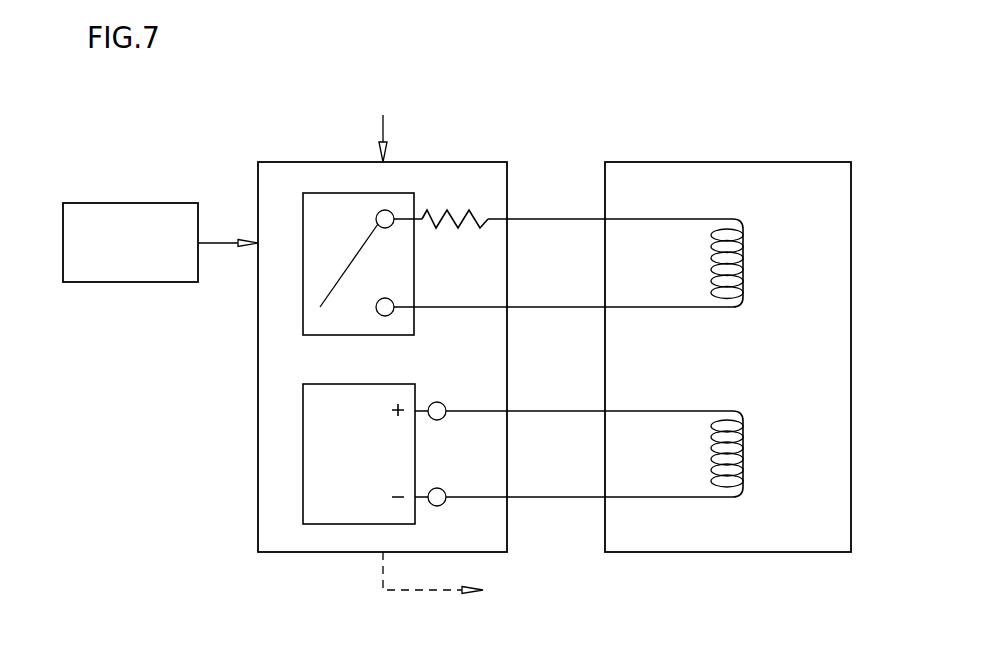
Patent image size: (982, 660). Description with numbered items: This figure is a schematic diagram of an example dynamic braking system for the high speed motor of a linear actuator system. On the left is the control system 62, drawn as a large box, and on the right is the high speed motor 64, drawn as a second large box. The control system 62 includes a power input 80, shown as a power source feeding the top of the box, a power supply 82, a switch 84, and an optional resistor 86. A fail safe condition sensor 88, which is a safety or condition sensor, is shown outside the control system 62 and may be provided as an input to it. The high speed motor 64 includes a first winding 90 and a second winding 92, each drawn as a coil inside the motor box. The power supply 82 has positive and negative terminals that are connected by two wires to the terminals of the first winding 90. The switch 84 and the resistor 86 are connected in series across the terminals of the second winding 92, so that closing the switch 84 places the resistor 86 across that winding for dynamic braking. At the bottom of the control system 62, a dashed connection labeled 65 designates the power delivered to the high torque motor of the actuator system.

The control system 62 is at (450, 162).
The high speed motor 64 is at (795, 162).
The power to high torque motor 65 is at (382, 572).
The power input 80 is at (382, 128).
The power supply 82 is at (303, 398).
The switch 84 is at (303, 207).
The resistor 86 is at (458, 207).
The fail safe condition sensor 88 is at (130, 203).
The first winding 90 is at (745, 430).
The second winding 92 is at (745, 240).